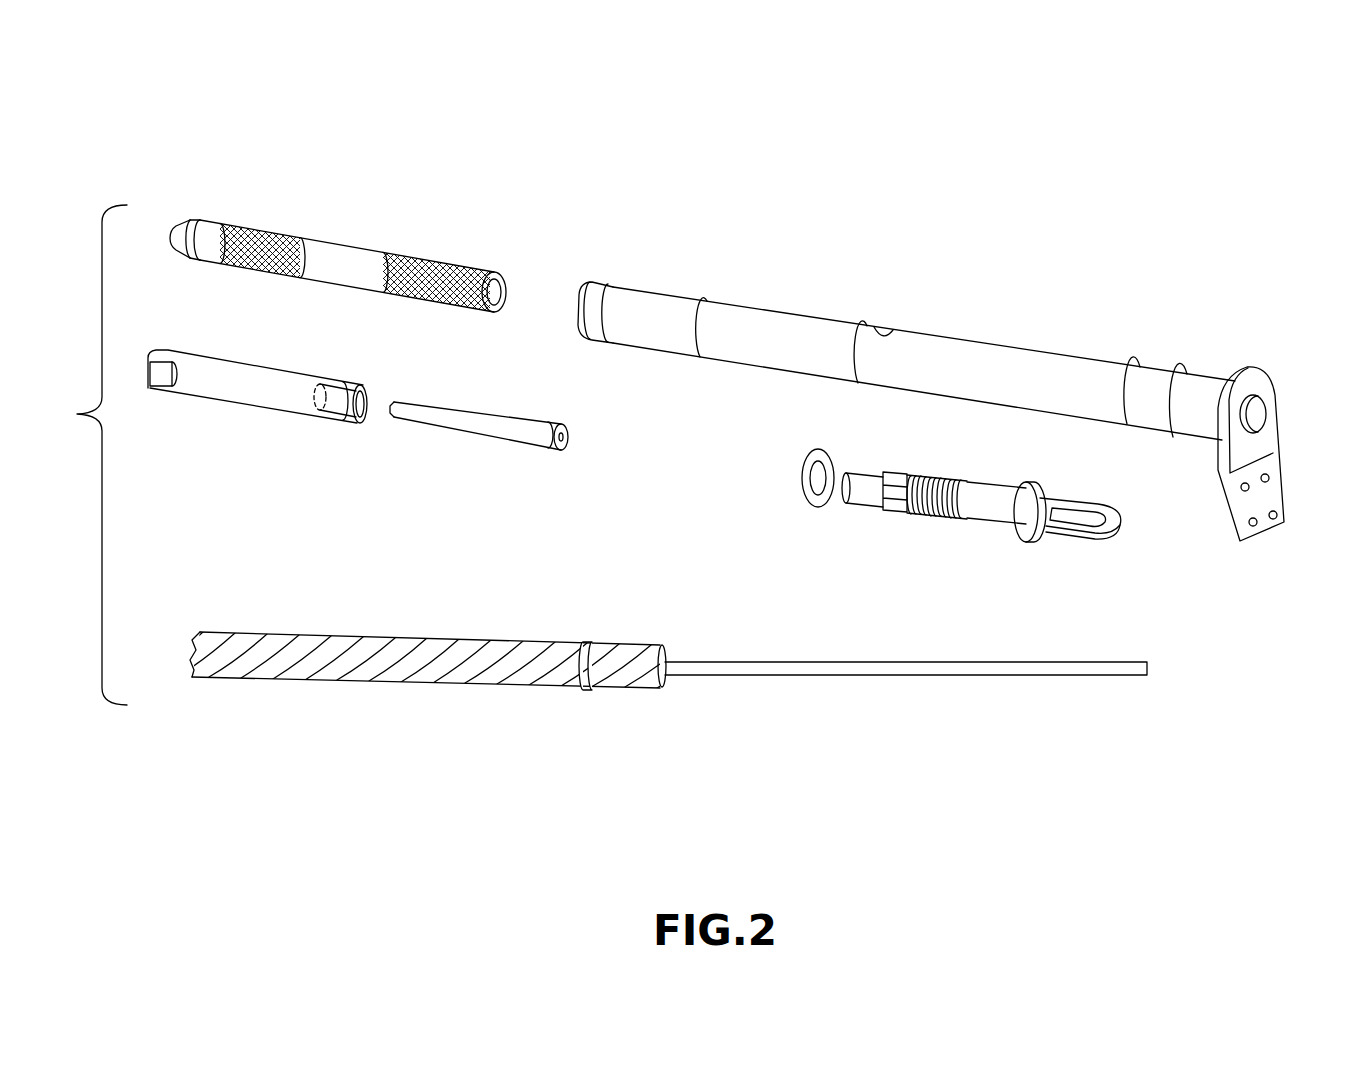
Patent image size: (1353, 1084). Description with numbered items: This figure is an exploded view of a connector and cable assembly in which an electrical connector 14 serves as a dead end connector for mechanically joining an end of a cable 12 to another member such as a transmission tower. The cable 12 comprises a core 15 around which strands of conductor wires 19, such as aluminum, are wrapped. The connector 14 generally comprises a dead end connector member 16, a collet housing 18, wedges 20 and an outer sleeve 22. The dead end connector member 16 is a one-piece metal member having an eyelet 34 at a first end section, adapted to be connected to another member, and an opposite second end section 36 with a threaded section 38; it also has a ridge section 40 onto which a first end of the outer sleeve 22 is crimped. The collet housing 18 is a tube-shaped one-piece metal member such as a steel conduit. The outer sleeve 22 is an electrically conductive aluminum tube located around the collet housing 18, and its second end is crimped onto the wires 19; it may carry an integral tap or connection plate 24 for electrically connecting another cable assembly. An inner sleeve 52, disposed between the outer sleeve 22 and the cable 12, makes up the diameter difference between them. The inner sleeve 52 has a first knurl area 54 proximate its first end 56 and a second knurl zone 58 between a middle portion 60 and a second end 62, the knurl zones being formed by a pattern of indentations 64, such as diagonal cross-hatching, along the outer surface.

The electrical connector 14 is at (348, 126).
The inner sleeve 52 is at (215, 222).
The second end 62 is at (185, 260).
The first end 56 is at (506, 284).
The second knurl zone 58 is at (220, 276).
The middle portion 60 is at (397, 244).
The first knurl area 54 is at (383, 307).
The indentations 64 is at (281, 236).
The collet housing 18 is at (213, 393).
The wedges 20 is at (472, 433).
The outer sleeve 22 is at (958, 345).
The connection plate 24 is at (1270, 495).
The threaded section 38 is at (861, 499).
The second end section 36 is at (873, 496).
The ridge section 40 is at (948, 514).
The dead end connector member 16 is at (1085, 534).
The eyelet 34 is at (1117, 508).
The cable 12 is at (530, 678).
The conductor wires 19 is at (457, 643).
The core 15 is at (747, 675).